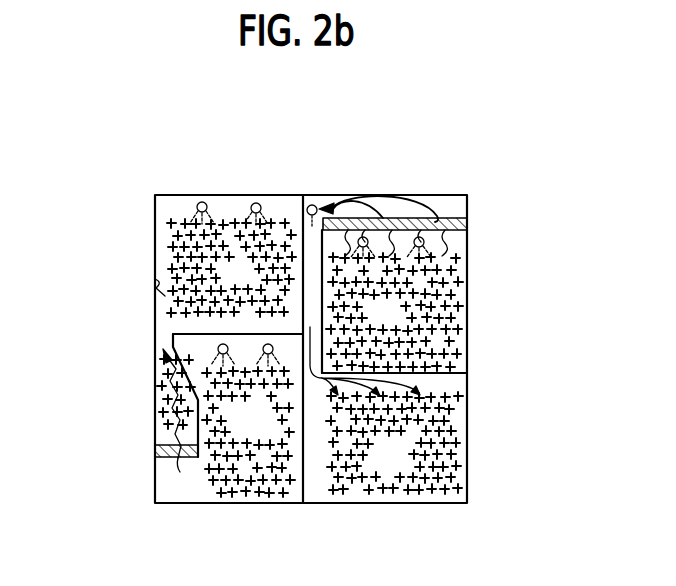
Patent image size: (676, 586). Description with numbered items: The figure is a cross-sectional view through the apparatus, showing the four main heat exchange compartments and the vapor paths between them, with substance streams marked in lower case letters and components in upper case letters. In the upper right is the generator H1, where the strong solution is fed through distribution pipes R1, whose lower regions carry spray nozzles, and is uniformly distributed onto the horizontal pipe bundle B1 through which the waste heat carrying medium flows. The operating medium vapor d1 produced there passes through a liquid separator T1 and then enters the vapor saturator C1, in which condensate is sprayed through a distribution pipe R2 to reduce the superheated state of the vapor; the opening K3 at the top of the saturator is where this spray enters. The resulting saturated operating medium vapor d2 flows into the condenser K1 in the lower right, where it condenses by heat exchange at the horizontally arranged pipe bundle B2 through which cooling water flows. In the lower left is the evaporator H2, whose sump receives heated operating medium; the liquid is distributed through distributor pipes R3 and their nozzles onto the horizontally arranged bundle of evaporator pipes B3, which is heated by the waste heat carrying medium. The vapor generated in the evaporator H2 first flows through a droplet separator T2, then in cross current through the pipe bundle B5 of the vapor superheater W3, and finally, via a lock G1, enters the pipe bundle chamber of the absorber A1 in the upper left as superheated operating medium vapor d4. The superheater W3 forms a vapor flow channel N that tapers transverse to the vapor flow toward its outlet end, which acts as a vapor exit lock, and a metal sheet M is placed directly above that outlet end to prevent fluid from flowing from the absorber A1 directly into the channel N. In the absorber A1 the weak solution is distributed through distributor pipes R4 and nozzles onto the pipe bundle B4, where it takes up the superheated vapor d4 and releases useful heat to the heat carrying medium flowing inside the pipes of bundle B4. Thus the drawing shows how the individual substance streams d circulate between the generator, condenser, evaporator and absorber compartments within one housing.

The absorber A1 is at (162, 241).
The horizontal pipe bundle of generator B1 is at (400, 322).
The pipe bundle of condenser B2 is at (403, 457).
The bundle of evaporator pipes B3 is at (261, 431).
The pipe bundle of absorber B4 is at (252, 284).
The pipe bundle of vapor superheater B5 is at (167, 415).
The vapor saturator C1 is at (302, 228).
The bead leaving lower channel d is at (180, 470).
The operating medium vapor d1 is at (392, 206).
The saturated operating medium vapor d2 is at (311, 380).
The superheated operating medium vapor d4 is at (163, 362).
The lock G1 is at (150, 301).
The generator H1 is at (462, 269).
The evaporator H2 is at (183, 500).
The condenser K1 is at (463, 434).
The bead inlet opening K3 is at (315, 204).
The metal sheet M is at (158, 282).
The vapor flow channel N is at (160, 380).
The distribution pipes R1 is at (422, 237).
The distribution pipe R2 is at (334, 207).
The distributor pipes R3 is at (263, 348).
The distributor pipes R4 is at (203, 201).
The liquid separator T1 is at (468, 226).
The droplet separator T2 is at (162, 449).
The vapor superheater W3 is at (147, 405).